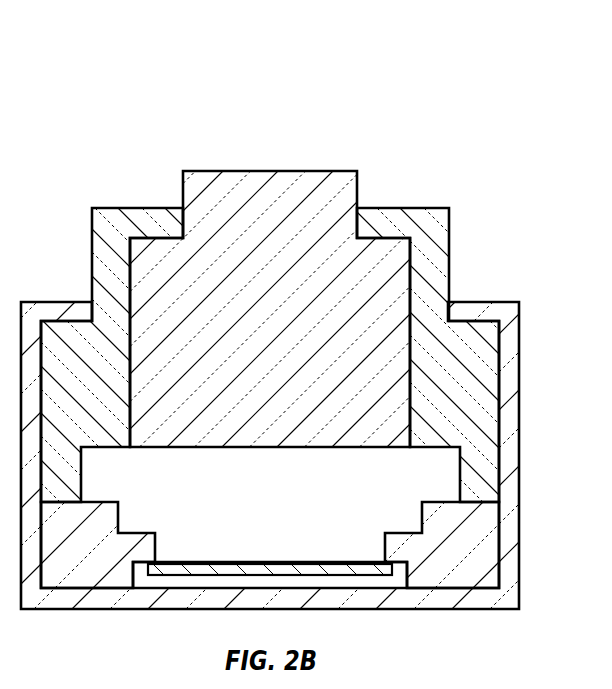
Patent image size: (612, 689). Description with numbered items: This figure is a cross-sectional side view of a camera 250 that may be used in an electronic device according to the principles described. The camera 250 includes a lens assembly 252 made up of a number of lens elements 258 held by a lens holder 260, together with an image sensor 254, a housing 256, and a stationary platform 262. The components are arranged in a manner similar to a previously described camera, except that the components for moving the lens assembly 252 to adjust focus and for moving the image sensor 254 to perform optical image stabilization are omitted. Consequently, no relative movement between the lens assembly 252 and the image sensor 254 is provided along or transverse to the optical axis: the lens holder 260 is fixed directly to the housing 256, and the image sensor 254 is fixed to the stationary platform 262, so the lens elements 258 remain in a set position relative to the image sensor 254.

The camera 250 is at (447, 61).
The lens assembly 252 is at (270, 311).
The image sensor 254 is at (250, 562).
The housing 256 is at (519, 367).
The lens elements 258 is at (255, 171).
The lens holder 260 is at (125, 208).
The stationary platform 262 is at (147, 533).